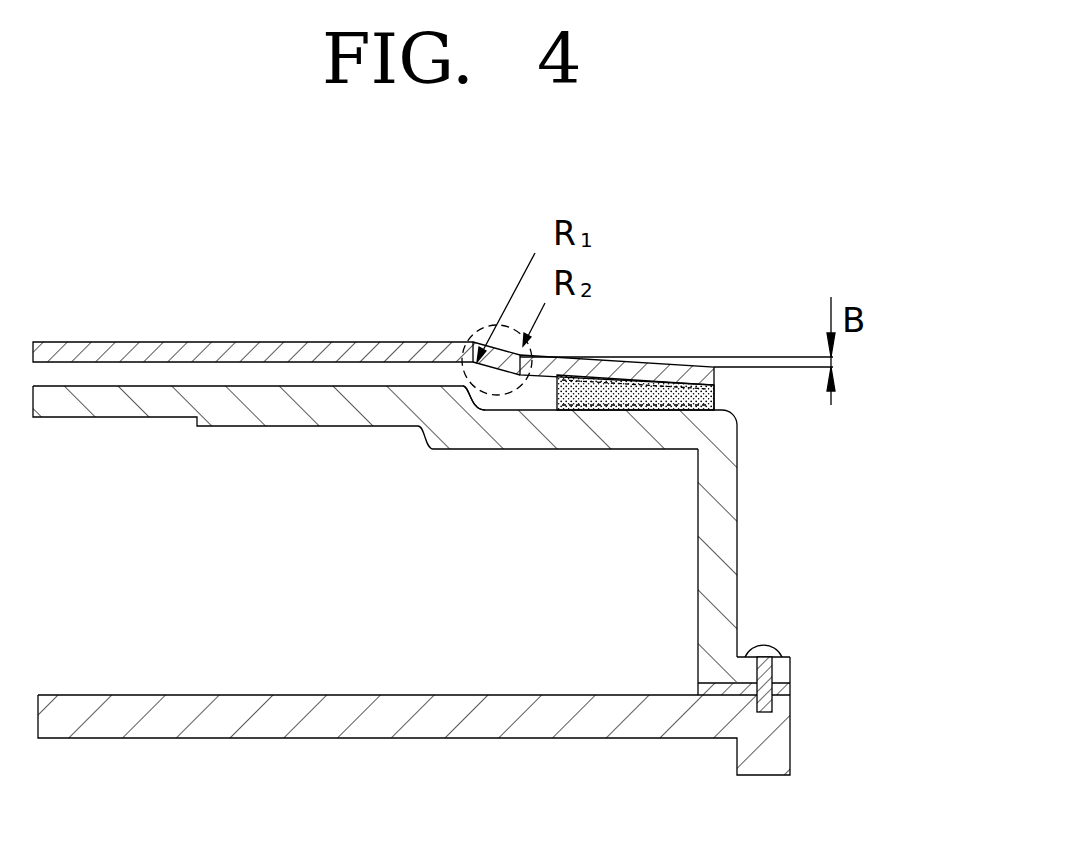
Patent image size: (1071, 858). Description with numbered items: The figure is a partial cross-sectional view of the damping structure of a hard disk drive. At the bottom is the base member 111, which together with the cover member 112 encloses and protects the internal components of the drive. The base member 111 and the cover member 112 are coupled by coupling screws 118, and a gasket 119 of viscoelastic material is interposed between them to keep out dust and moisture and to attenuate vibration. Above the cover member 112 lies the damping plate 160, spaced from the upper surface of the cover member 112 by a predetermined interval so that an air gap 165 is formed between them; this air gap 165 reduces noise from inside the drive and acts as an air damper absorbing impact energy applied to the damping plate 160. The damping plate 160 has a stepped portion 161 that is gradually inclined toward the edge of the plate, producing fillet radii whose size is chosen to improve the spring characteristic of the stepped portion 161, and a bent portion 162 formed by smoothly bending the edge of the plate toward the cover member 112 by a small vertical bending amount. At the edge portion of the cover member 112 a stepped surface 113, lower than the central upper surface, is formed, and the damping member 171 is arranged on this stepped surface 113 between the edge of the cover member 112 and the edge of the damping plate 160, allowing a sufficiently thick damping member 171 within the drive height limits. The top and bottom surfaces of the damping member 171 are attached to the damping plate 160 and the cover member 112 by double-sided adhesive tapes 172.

The base member 111 is at (790, 762).
The cover member 112 is at (737, 548).
The stepped surface 113 is at (523, 407).
The coupling screw 118 is at (778, 652).
The gasket 119 is at (775, 688).
The damping plate 160 is at (217, 353).
The stepped portion 161 is at (475, 337).
The bent portion 162 is at (692, 360).
The air gap 165 is at (110, 372).
The damping member 171 is at (714, 393).
The double-sided adhesive tape 172 is at (714, 382).